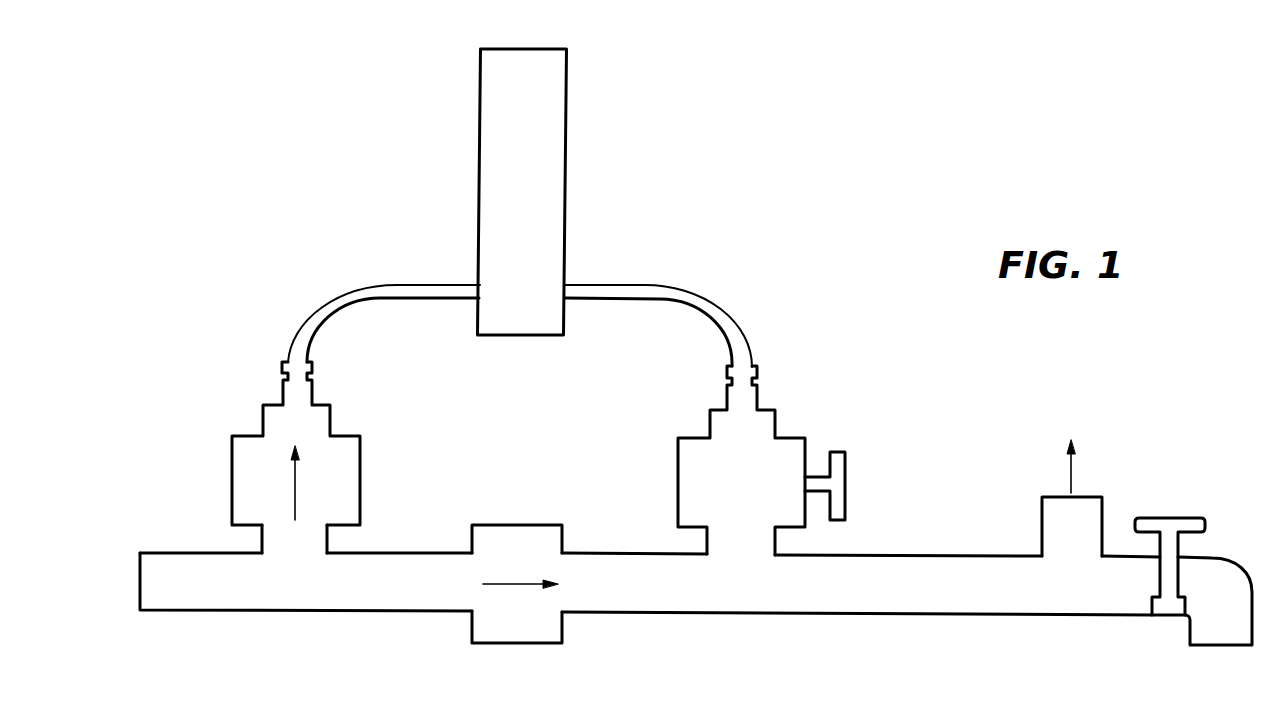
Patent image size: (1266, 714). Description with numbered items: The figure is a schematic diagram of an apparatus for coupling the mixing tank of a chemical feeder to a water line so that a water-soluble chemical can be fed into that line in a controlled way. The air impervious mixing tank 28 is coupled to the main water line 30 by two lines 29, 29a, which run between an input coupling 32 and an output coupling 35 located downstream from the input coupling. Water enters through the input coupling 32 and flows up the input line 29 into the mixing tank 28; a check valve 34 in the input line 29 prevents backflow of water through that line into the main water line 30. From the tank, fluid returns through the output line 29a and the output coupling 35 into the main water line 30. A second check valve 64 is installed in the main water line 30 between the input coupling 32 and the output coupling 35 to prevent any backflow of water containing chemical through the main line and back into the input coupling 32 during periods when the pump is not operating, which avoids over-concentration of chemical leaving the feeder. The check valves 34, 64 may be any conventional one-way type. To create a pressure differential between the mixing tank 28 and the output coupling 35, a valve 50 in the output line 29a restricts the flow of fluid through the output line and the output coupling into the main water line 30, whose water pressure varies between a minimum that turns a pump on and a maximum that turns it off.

The mixing tank 28 is at (552, 130).
The input line 29 is at (325, 311).
The output line 29a is at (727, 322).
The main water line 30 is at (338, 592).
The input coupling 32 is at (268, 534).
The check valve 34 is at (340, 485).
The output coupling 35 is at (770, 549).
The valve 50 is at (857, 483).
The second check valve 64 is at (512, 538).